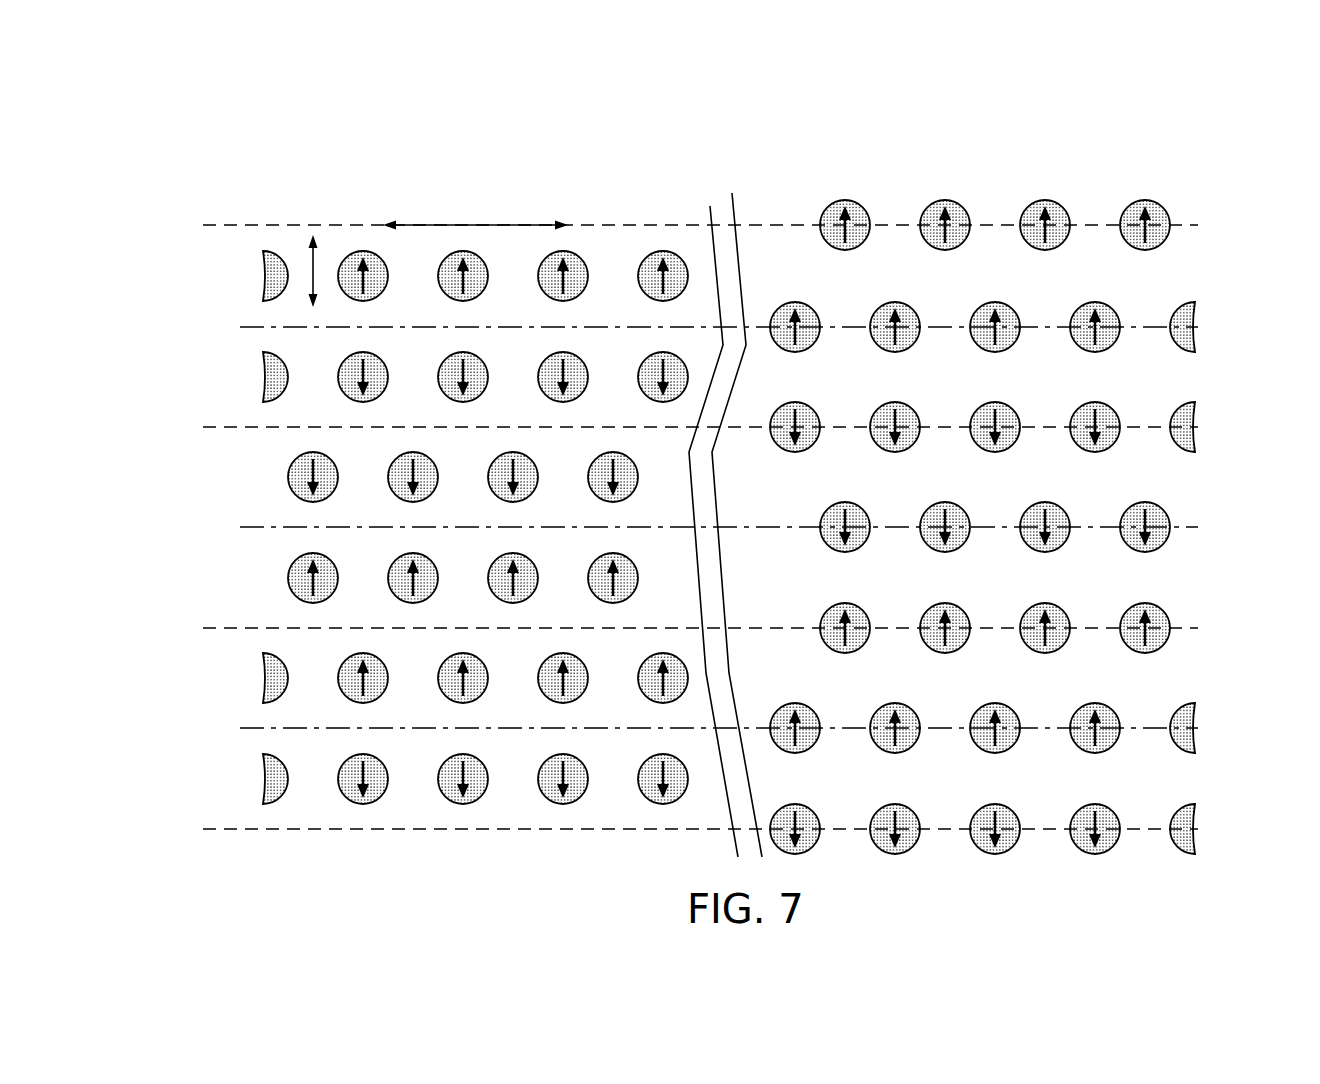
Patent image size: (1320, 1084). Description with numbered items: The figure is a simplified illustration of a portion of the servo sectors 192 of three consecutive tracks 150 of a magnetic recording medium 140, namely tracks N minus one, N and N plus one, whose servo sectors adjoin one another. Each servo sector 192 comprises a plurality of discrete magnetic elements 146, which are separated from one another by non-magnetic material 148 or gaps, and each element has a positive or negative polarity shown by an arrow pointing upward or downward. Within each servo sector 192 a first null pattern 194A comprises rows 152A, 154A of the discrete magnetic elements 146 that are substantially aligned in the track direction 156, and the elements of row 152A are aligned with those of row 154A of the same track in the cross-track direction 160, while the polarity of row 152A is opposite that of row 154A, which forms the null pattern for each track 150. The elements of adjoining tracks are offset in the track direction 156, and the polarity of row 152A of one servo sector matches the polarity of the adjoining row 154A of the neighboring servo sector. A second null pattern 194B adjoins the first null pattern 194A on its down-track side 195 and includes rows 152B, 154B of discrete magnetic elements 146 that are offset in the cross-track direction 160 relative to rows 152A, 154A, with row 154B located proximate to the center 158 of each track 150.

The magnetic recording medium 140 is at (269, 176).
The discrete magnetic elements 146 is at (854, 200).
The non-magnetic material 148 is at (616, 270).
The tracks 150 is at (652, 527).
The row of first null pattern 152A is at (248, 276).
The row of first null pattern 154A is at (455, 578).
The row of second null pattern 152B is at (1006, 504).
The row of second null pattern 154B is at (1212, 327).
The track direction 156 is at (493, 225).
The center of track 158 is at (258, 327).
The cross-track direction 160 is at (312, 235).
The servo sectors 192 is at (203, 246).
The first null pattern 194A is at (613, 149).
The second null pattern 194B is at (1045, 151).
The down-track side 195 is at (747, 184).